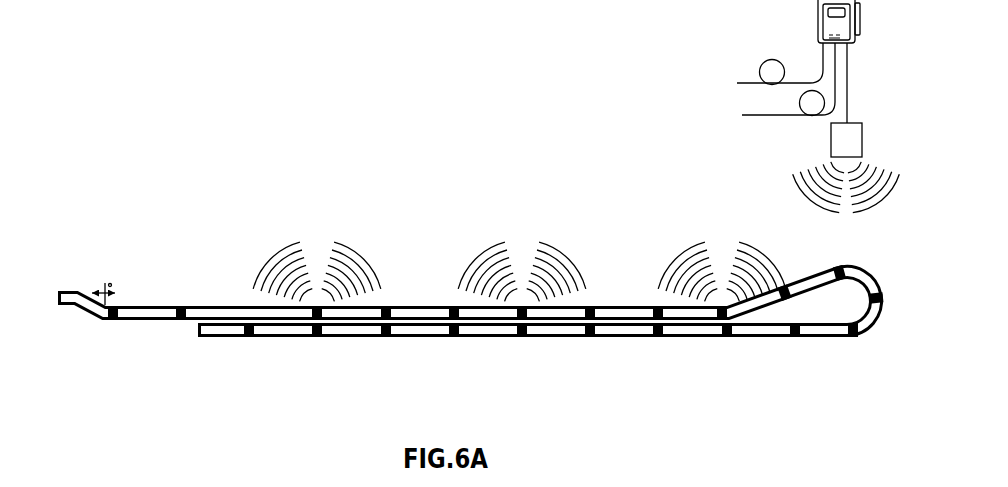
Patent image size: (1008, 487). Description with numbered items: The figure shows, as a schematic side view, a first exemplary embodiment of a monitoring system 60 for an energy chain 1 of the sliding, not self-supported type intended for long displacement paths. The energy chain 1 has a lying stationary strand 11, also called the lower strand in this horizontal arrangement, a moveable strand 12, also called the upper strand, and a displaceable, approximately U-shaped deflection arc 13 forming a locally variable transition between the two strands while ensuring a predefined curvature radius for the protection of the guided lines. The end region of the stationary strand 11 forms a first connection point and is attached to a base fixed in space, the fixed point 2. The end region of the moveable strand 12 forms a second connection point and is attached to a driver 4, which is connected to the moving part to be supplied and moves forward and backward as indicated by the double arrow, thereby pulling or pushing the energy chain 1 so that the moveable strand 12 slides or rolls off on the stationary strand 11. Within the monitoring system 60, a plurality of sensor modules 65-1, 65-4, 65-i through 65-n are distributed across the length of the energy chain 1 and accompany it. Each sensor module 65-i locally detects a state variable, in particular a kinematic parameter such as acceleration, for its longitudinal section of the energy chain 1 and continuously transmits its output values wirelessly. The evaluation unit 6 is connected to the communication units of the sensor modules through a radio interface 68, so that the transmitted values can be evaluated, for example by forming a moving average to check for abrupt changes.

The monitoring system 60 is at (148, 73).
The energy chain 1 is at (486, 306).
The fixed point 2 is at (208, 333).
The driver 4 is at (76, 283).
The evaluation unit 6 is at (830, 27).
The stationary strand 11 is at (475, 341).
The moveable strand 12 is at (622, 304).
The deflection arc 13 is at (878, 276).
The sensor module 65-1 is at (113, 306).
The sensor module 65-4 is at (319, 306).
The sensor module 65-i is at (523, 306).
The sensor module 65-n is at (257, 334).
The radio interface 68 is at (848, 141).